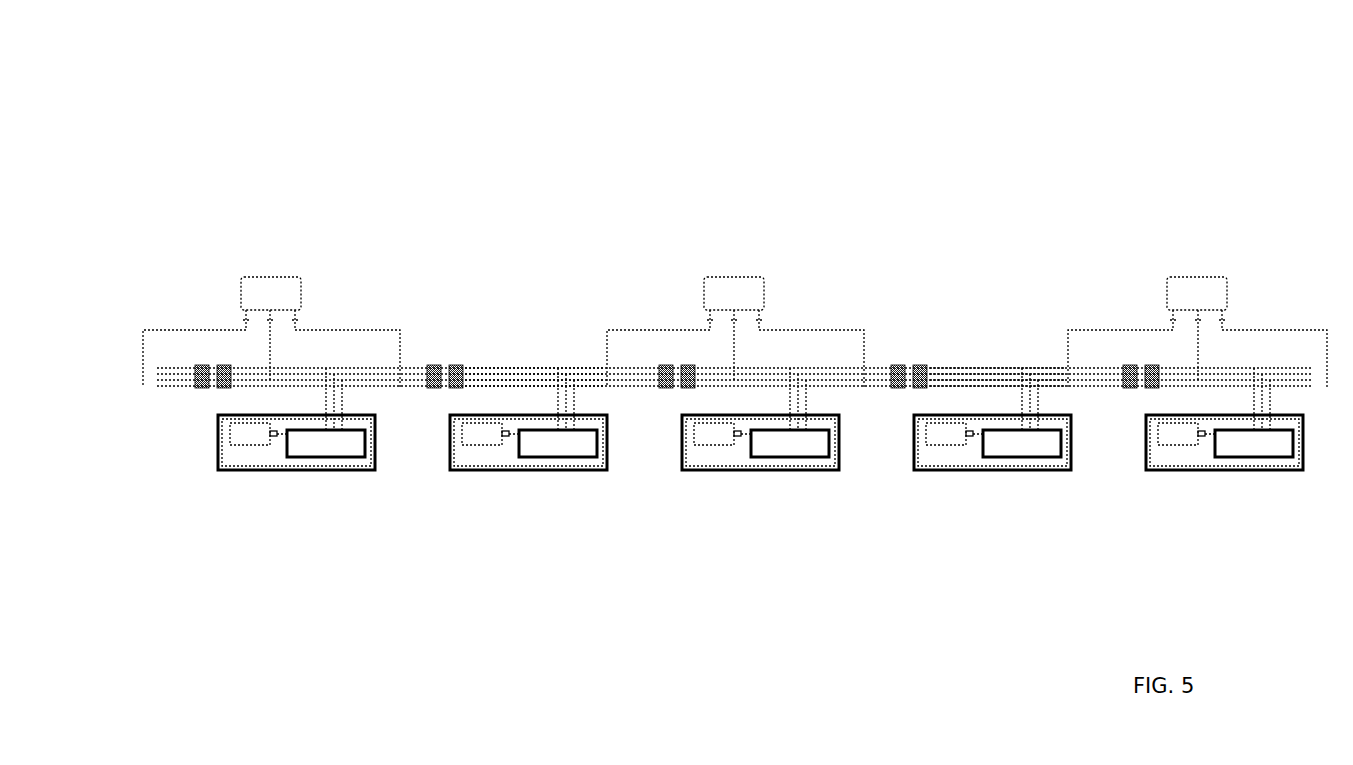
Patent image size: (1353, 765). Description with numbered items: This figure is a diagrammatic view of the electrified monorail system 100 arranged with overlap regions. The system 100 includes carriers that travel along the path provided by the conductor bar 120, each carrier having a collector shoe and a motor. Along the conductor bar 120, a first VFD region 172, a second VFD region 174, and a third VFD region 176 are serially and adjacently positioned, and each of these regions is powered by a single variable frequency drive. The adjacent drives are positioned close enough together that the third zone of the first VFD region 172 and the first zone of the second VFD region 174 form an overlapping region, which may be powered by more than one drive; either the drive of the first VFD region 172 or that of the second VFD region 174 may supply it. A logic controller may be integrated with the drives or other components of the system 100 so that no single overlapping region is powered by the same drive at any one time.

The electrified monorail system 100 is at (870, 147).
The conductor bar 120 is at (488, 370).
The first VFD region 172 is at (326, 140).
The second VFD region 174 is at (747, 186).
The third VFD region 176 is at (1181, 155).